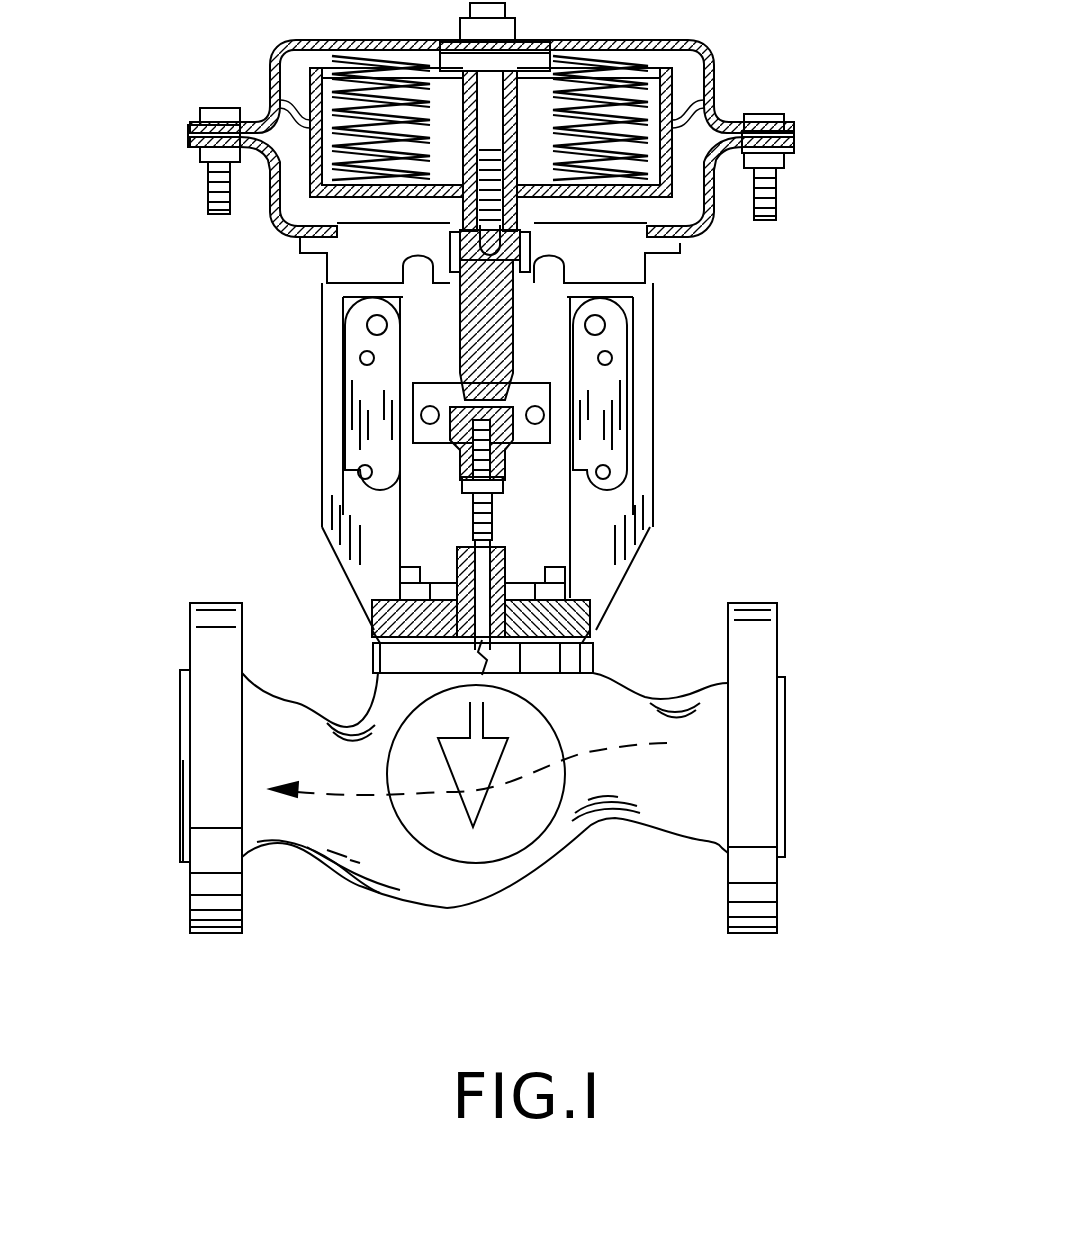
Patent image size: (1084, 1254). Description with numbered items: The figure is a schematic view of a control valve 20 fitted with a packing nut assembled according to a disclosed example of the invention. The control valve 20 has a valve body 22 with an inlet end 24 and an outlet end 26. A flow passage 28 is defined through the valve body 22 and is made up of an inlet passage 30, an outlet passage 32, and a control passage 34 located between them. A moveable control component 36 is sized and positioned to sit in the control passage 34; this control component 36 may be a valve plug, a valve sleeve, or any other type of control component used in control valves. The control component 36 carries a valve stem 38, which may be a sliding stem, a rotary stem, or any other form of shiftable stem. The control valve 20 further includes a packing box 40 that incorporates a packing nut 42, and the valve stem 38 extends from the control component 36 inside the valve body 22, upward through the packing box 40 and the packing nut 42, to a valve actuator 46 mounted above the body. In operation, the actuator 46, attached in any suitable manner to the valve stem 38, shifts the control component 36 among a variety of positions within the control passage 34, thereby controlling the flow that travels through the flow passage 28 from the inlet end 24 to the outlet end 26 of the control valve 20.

The control valve 20 is at (152, 587).
The valve body 22 is at (353, 793).
The inlet end 24 is at (777, 870).
The outlet end 26 is at (187, 865).
The flow passage 28 is at (365, 893).
The inlet passage 30 is at (787, 707).
The outlet passage 32 is at (182, 755).
The control passage 34 is at (525, 778).
The control component 36 is at (455, 863).
The valve stem 38 is at (480, 543).
The packing box 40 is at (507, 587).
The packing nut 42 is at (453, 580).
The valve actuator 46 is at (692, 250).